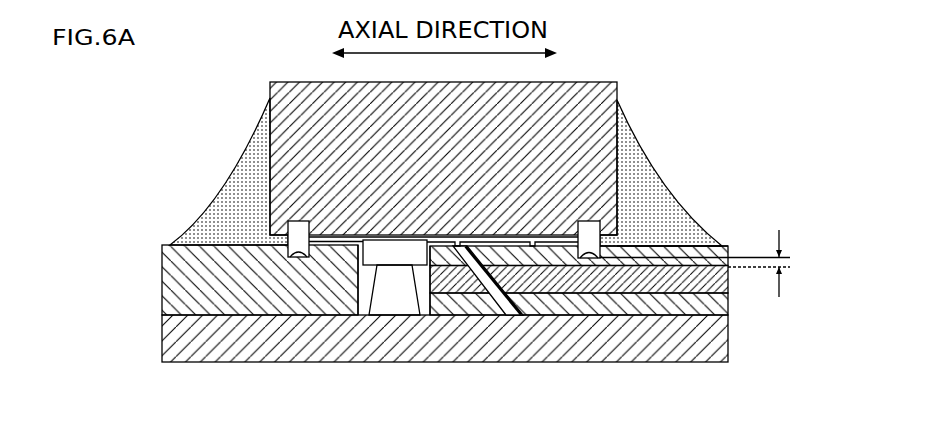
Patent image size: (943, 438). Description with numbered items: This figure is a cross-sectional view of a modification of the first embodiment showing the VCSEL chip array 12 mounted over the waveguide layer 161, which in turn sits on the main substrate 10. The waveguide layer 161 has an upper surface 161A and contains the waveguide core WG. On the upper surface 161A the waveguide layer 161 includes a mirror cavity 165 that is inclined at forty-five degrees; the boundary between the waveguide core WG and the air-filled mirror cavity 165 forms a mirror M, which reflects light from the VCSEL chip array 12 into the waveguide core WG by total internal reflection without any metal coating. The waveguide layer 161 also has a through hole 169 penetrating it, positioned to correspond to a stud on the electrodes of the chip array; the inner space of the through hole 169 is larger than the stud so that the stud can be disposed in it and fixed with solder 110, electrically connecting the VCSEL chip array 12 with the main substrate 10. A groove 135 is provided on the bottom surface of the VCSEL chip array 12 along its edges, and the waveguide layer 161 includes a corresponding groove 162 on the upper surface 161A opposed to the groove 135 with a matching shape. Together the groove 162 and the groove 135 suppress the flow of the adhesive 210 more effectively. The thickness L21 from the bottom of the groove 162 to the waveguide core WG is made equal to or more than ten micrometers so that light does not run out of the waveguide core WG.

The main substrate 10 is at (162, 340).
The VCSEL chip array 12 is at (597, 82).
The solder 110 is at (440, 318).
The groove 135 is at (288, 232).
The waveguide layer 161 is at (162, 302).
The upper surface 161A is at (657, 246).
The groove 162 is at (289, 255).
The mirror cavity 165 is at (489, 282).
The through hole 169 is at (377, 318).
The adhesive 210 is at (230, 178).
The thickness from the bottom of the groove to the waveguide core L21 is at (714, 263).
The mirror M is at (537, 320).
The waveguide core WG is at (731, 280).